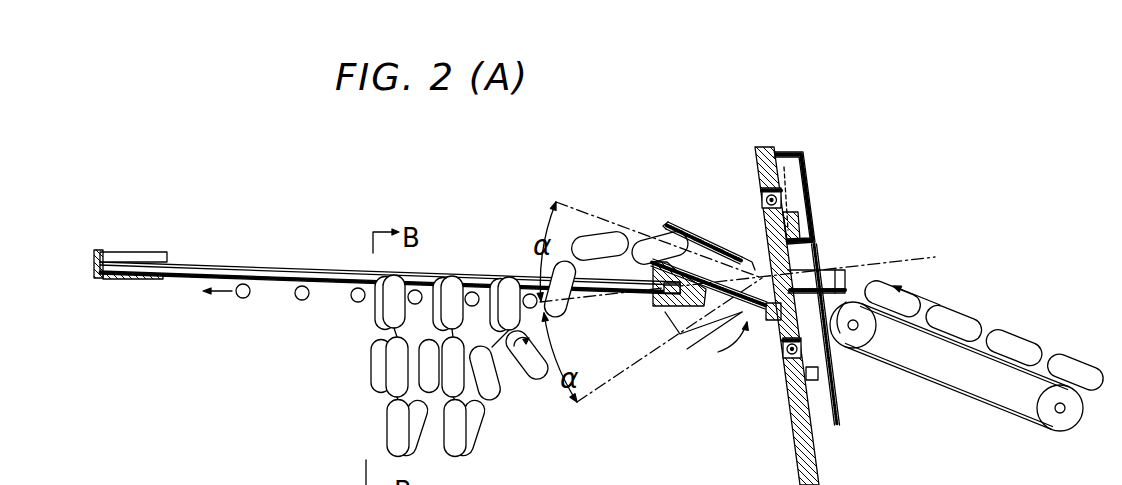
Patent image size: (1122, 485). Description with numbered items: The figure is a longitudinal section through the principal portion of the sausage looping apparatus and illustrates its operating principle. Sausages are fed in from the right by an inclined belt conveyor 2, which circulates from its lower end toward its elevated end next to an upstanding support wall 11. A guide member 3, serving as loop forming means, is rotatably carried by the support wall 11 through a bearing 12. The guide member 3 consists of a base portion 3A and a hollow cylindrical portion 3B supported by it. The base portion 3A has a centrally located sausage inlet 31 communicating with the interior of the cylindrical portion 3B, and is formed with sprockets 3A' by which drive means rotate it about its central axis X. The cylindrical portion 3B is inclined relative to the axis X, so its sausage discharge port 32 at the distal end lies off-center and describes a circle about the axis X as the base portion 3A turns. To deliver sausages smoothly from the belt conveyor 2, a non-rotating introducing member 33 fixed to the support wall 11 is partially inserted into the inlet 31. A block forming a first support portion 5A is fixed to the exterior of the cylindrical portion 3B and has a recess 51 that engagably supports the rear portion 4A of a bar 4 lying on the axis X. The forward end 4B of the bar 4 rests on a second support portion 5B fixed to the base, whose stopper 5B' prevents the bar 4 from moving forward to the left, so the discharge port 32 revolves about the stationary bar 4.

The belt conveyor 2 is at (975, 352).
The guide member 3 is at (843, 114).
The base portion 3A is at (810, 178).
The sprockets 3A' is at (855, 339).
The hollow cylindrical portion 3B is at (698, 190).
The bar 4 is at (304, 262).
The rear portion of bar 4A is at (636, 290).
The forward end of bar 4B is at (149, 262).
The first support portion 5A is at (707, 306).
The second support portion 5B is at (130, 302).
The stopper 5B' is at (93, 242).
The support wall 11 is at (795, 447).
The bearing 12 is at (785, 345).
The sausage inlet 31 is at (820, 264).
The sausage discharge port 32 is at (660, 224).
The introducing member 33 is at (797, 222).
The recess 51 is at (690, 283).
The central axis X is at (862, 265).